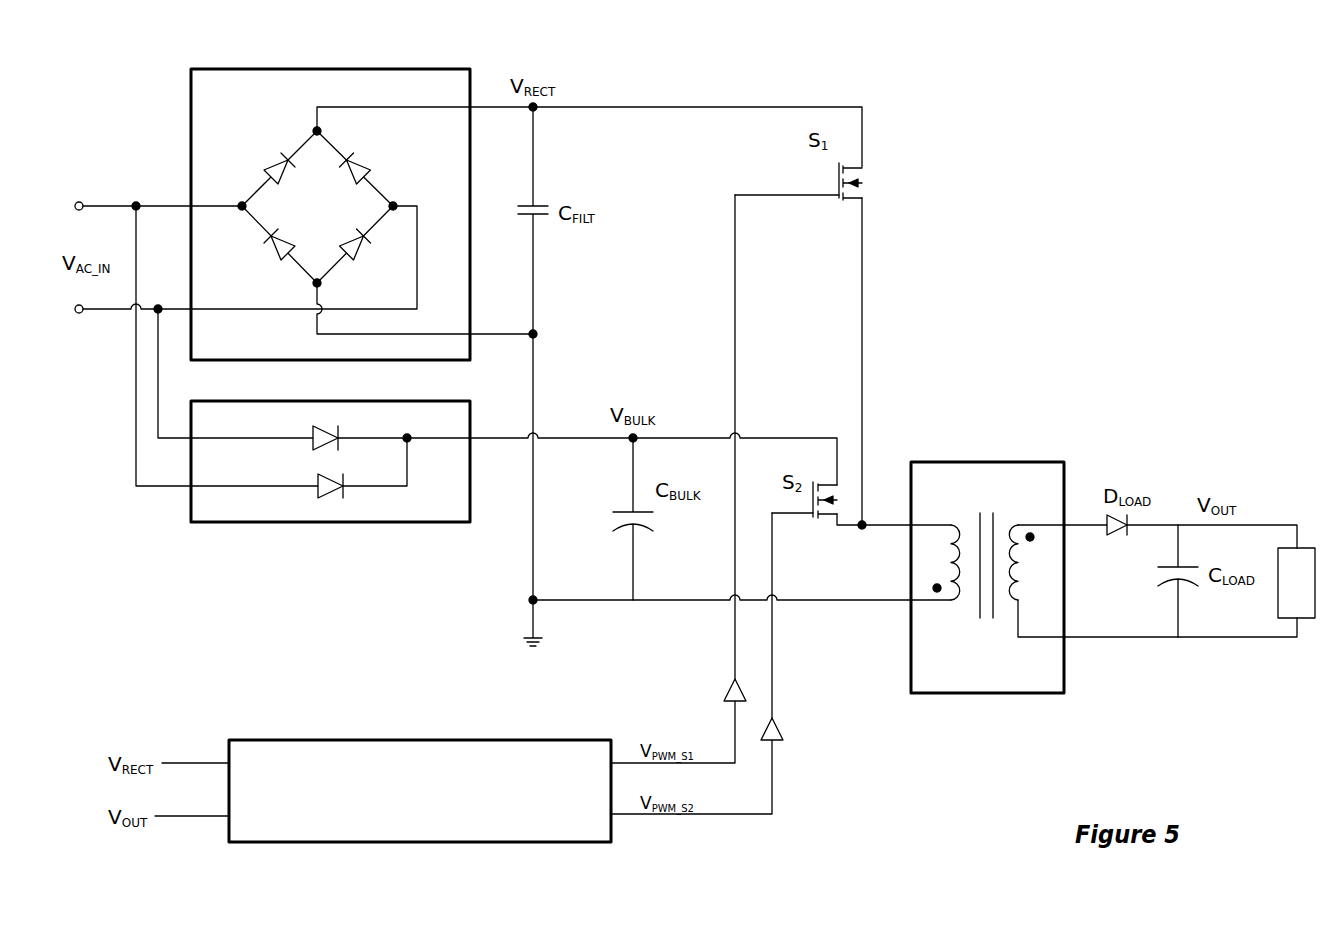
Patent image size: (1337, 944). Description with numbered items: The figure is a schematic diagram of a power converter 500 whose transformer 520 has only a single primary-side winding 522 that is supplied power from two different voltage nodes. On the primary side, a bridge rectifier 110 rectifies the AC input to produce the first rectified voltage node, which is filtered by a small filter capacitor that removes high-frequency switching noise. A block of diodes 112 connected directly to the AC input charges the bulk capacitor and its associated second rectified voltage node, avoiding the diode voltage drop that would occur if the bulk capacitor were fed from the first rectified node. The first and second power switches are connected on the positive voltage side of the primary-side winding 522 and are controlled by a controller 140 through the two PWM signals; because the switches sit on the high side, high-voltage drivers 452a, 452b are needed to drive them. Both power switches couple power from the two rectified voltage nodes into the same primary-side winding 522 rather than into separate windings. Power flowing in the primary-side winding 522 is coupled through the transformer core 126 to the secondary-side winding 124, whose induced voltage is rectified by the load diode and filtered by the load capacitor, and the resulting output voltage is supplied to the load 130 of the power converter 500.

The power converter 500 is at (1187, 86).
The bridge rectifier 110 is at (330, 200).
The diode circuit 112 is at (330, 447).
The controller 140 is at (420, 778).
The transformer 520 is at (987, 563).
The primary-side winding 522 is at (942, 548).
The secondary-side winding 124 is at (1024, 548).
The transformer core 126 is at (989, 584).
The load 130 is at (1306, 563).
The high-voltage driver 452a is at (678, 479).
The high-voltage driver 452b is at (717, 663).